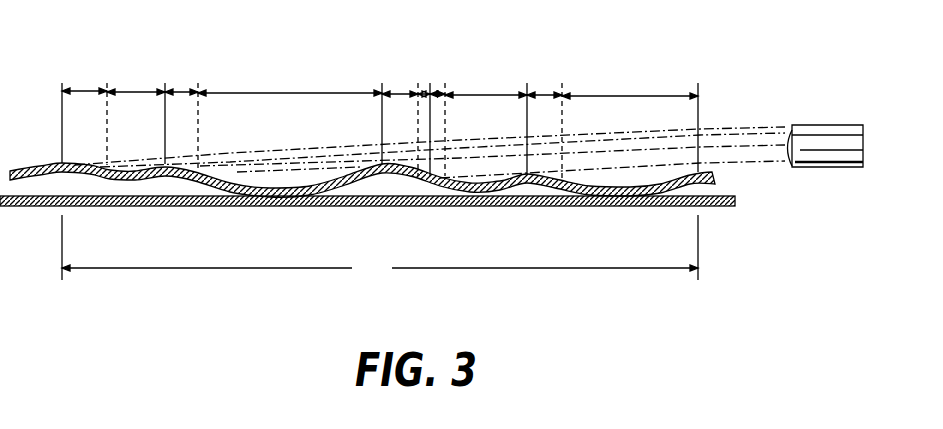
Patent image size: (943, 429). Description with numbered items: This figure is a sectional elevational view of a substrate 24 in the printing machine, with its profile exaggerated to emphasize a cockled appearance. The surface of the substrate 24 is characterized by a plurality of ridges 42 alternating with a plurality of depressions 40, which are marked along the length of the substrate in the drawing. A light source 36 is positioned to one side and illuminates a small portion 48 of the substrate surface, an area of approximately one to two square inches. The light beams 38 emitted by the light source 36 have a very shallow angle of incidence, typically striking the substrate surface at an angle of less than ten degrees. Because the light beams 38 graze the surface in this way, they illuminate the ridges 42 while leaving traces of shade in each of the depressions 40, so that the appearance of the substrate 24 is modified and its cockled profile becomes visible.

The substrate 24 is at (360, 184).
The light source 36 is at (826, 125).
The light beams 38 is at (744, 125).
The depressions 40 is at (136, 88).
The ridges 42 is at (86, 88).
The small portion 48 is at (380, 248).